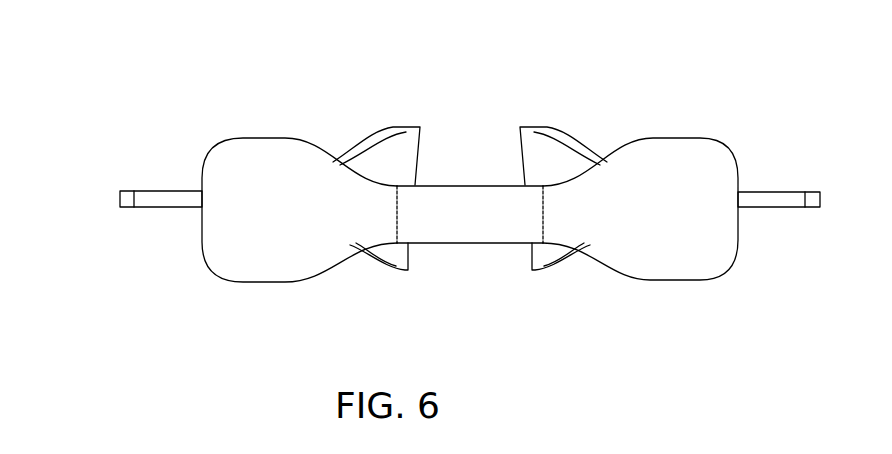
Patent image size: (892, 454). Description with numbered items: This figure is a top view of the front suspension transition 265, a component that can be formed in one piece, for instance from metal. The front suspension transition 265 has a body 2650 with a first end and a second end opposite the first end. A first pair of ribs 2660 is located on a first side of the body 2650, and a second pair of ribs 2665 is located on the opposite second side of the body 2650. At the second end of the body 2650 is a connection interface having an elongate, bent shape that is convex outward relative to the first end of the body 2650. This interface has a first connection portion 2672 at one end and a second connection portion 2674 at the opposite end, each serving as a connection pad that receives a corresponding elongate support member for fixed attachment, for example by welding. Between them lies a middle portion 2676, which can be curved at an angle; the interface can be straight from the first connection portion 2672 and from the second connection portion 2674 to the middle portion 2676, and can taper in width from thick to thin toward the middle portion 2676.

The front suspension transition 265 is at (165, 82).
The body 2650 is at (120, 194).
The first pair of ribs 2660 is at (400, 255).
The second pair of ribs 2665 is at (410, 135).
The first connection portion 2672 is at (273, 152).
The second connection portion 2674 is at (678, 165).
The middle portion 2676 is at (470, 212).